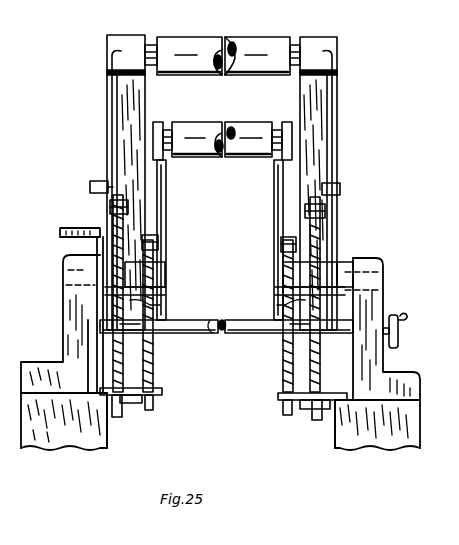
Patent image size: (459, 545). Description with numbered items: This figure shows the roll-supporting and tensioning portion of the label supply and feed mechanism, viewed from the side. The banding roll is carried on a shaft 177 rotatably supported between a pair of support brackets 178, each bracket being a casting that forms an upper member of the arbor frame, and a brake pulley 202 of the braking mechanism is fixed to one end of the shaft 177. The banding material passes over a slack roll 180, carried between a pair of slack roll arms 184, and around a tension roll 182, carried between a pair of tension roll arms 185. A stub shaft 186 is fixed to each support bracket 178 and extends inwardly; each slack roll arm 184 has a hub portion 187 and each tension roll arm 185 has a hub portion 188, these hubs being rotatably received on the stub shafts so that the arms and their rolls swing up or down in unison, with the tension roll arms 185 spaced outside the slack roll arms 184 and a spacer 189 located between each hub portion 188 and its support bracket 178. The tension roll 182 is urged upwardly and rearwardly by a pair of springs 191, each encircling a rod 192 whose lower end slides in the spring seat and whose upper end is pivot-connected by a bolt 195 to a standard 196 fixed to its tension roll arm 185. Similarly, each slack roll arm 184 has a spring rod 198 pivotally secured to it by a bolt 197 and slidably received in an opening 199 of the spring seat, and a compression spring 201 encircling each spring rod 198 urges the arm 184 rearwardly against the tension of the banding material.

The shaft 177 is at (210, 320).
The support bracket 178 is at (67, 283).
The slack roll 180 is at (240, 125).
The tension roll 182 is at (271, 42).
The slack roll arm 184 is at (166, 196).
The tension roll arm 185 is at (108, 104).
The stub shaft 186 is at (167, 275).
The hub portion 187 is at (160, 290).
The hub portion 188 is at (158, 305).
The spacer 189 is at (342, 270).
The spring 191 is at (110, 342).
The rod 192 is at (150, 340).
The bolt 195 is at (108, 208).
The standard 196 is at (105, 182).
The bolt 197 is at (163, 243).
The spring rod 198 is at (160, 358).
The opening 199 is at (160, 392).
The compression spring 201 is at (155, 372).
The brake pulley 202 is at (398, 334).